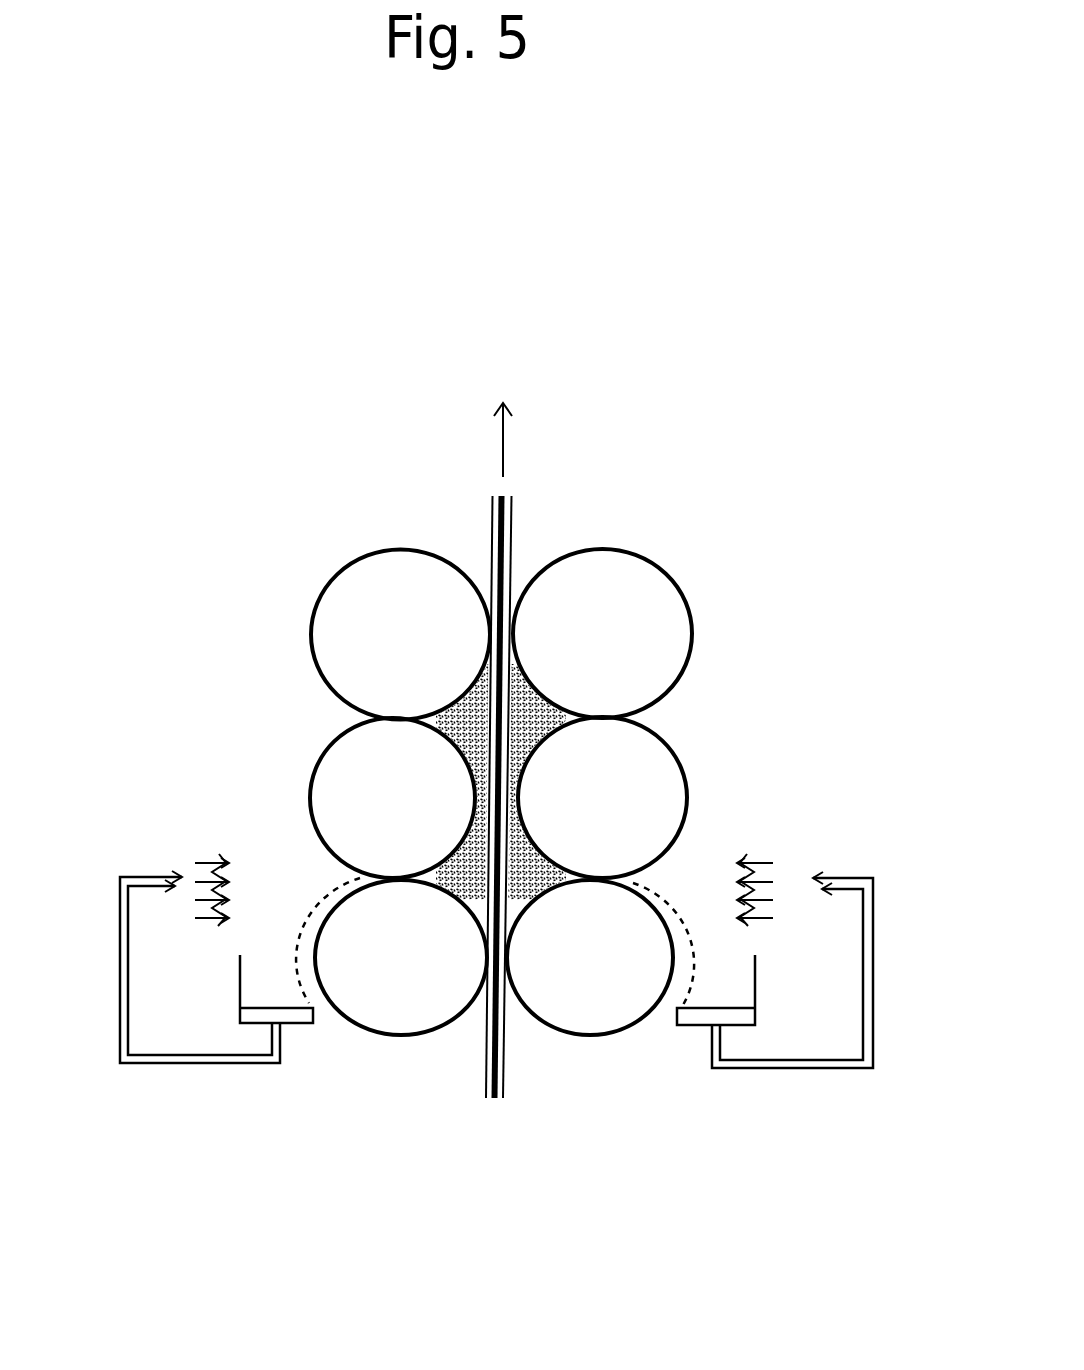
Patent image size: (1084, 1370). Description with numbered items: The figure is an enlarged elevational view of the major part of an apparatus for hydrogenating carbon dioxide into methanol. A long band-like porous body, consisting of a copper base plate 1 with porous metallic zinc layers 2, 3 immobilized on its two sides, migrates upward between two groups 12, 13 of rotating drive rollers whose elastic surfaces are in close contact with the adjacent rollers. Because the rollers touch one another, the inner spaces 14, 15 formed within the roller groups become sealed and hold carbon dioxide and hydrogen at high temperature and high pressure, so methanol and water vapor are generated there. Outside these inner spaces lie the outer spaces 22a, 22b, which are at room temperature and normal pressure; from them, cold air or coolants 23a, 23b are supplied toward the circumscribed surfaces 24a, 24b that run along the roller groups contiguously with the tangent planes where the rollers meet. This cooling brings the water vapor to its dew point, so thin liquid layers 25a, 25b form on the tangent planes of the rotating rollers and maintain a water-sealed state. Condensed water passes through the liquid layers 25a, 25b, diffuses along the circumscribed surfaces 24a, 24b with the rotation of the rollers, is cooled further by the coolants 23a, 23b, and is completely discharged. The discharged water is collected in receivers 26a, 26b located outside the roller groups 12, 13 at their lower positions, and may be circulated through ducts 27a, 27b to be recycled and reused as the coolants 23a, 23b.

The copper base plate 1 is at (493, 1098).
The porous metallic zinc layer 2 is at (487, 1080).
The porous metallic zinc layer 3 is at (503, 1082).
The group of drive rollers 12 is at (398, 590).
The group of drive rollers 13 is at (607, 590).
The inner space 14 is at (445, 870).
The inner space 15 is at (549, 867).
The outer space 22a is at (355, 697).
The outer space 22b is at (635, 697).
The coolant 23a is at (246, 890).
The coolant 23b is at (724, 890).
The circumscribed surface 24a is at (362, 882).
The circumscribed surface 24b is at (633, 880).
The thin liquid layer 25a is at (397, 875).
The thin liquid layer 25b is at (598, 877).
The receiver 26a is at (238, 973).
The receiver 26b is at (757, 973).
The duct 27a is at (162, 967).
The duct 27b is at (830, 970).